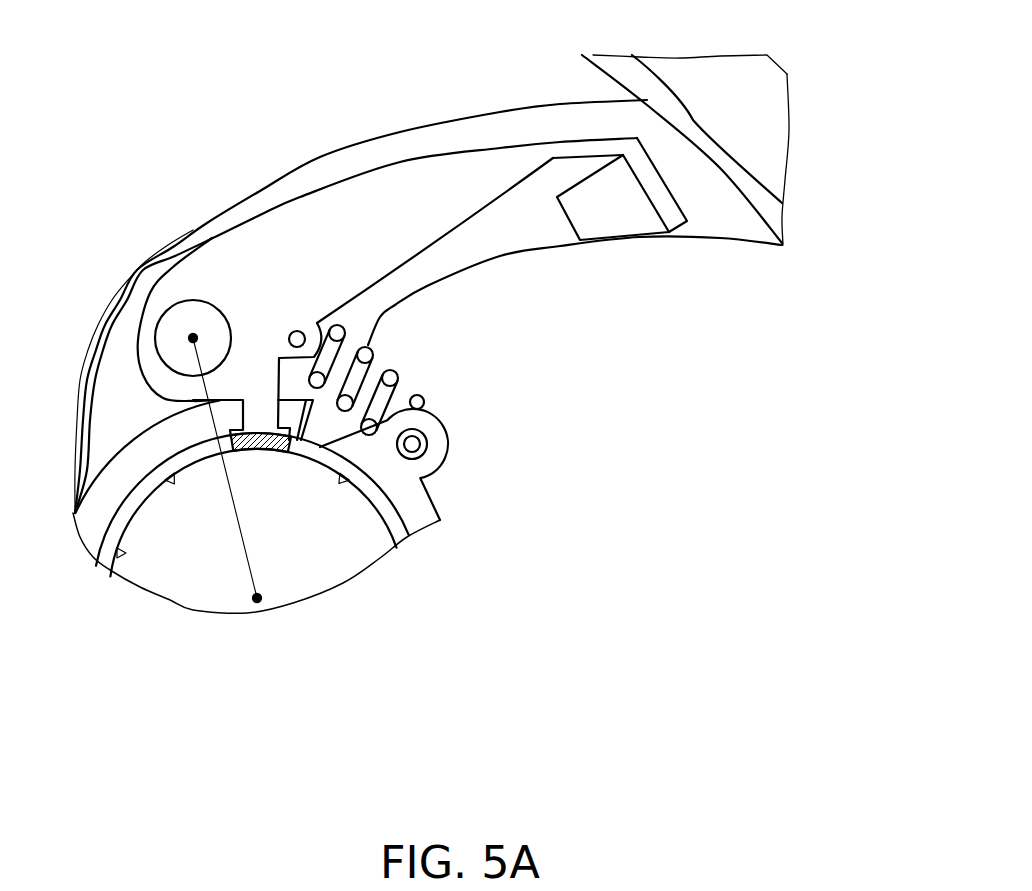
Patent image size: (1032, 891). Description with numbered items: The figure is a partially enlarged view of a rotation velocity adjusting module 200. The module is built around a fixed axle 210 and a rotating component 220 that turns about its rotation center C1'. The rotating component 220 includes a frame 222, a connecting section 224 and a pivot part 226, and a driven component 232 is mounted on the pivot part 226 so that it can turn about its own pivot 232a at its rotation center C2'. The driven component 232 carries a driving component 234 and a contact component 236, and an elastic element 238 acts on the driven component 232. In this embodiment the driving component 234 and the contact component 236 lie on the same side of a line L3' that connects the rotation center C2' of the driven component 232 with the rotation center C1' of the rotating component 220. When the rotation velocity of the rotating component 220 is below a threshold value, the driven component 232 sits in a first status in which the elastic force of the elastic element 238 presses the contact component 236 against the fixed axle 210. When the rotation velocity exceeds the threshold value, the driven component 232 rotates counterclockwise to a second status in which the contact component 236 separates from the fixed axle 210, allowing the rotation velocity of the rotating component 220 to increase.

The rotation velocity adjusting module 200 is at (832, 687).
The fixed axle 210 is at (305, 573).
The rotating component 220 is at (800, 138).
The frame 222 is at (767, 103).
The connecting section 224 is at (328, 170).
The pivot part 226 is at (288, 417).
The driven component 232 is at (412, 193).
The pivot 232a is at (191, 312).
The driving component 234 is at (600, 185).
The contact component 236 is at (262, 438).
The elastic element 238 is at (398, 377).
The rotation center of the rotating component C1' is at (268, 638).
The rotation center of the driven component C2' is at (124, 279).
The line connecting rotation center C2' and rotation center C1' L3' is at (224, 509).